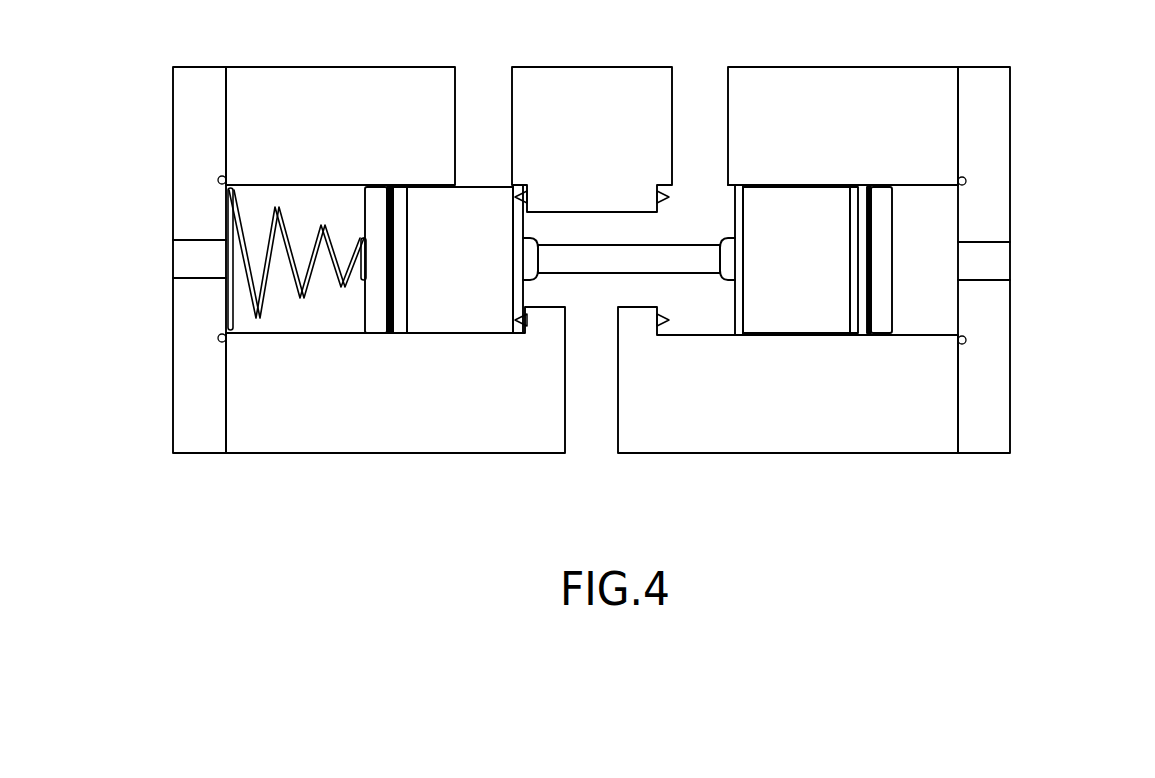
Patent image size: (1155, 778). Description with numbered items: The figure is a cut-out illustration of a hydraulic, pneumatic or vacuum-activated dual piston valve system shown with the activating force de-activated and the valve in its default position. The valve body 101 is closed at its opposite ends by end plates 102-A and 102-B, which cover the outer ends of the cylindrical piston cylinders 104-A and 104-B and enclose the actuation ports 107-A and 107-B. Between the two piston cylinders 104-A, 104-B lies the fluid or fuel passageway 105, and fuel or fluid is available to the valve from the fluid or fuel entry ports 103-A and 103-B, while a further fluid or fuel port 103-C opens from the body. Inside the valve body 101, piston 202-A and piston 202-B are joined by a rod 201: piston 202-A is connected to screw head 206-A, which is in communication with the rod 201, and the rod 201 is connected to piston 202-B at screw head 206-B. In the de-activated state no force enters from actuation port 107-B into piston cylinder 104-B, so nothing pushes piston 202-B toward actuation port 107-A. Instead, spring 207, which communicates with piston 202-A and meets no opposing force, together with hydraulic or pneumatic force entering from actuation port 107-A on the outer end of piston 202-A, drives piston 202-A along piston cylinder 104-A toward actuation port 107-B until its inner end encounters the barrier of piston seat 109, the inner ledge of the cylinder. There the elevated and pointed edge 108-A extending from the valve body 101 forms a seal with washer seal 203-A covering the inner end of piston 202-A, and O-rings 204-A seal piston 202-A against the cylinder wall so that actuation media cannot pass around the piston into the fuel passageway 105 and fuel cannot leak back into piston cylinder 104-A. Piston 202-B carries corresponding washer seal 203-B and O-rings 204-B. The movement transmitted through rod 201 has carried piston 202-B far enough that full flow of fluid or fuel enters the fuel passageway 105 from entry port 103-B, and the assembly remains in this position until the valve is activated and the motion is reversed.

The valve body 101 is at (362, 136).
The end plate 102-A is at (192, 90).
The end plate 102-B is at (990, 92).
The fluid or fuel port 103-A is at (480, 87).
The fluid or fuel port 103-B is at (697, 88).
The fluid or fuel port 103-C is at (595, 430).
The piston cylinder 104-A is at (350, 212).
The piston cylinder 104-B is at (952, 277).
The fluid or fuel passageway 105 is at (647, 242).
The actuation port 107-A is at (192, 258).
The actuation port 107-B is at (990, 258).
The elevated and pointed edge 108-A is at (527, 200).
The piston seat 109 is at (527, 198).
The rod 201 is at (643, 258).
The piston 202-A is at (487, 272).
The piston 202-B is at (827, 273).
The washer seal 203-A is at (517, 335).
The washer seal 203-B is at (740, 335).
The O-rings or seals 204-A is at (407, 335).
The O-rings or seals 204-B is at (853, 335).
The screw head 206-A is at (525, 280).
The screw head 206-B is at (727, 243).
The spring 207 is at (265, 288).